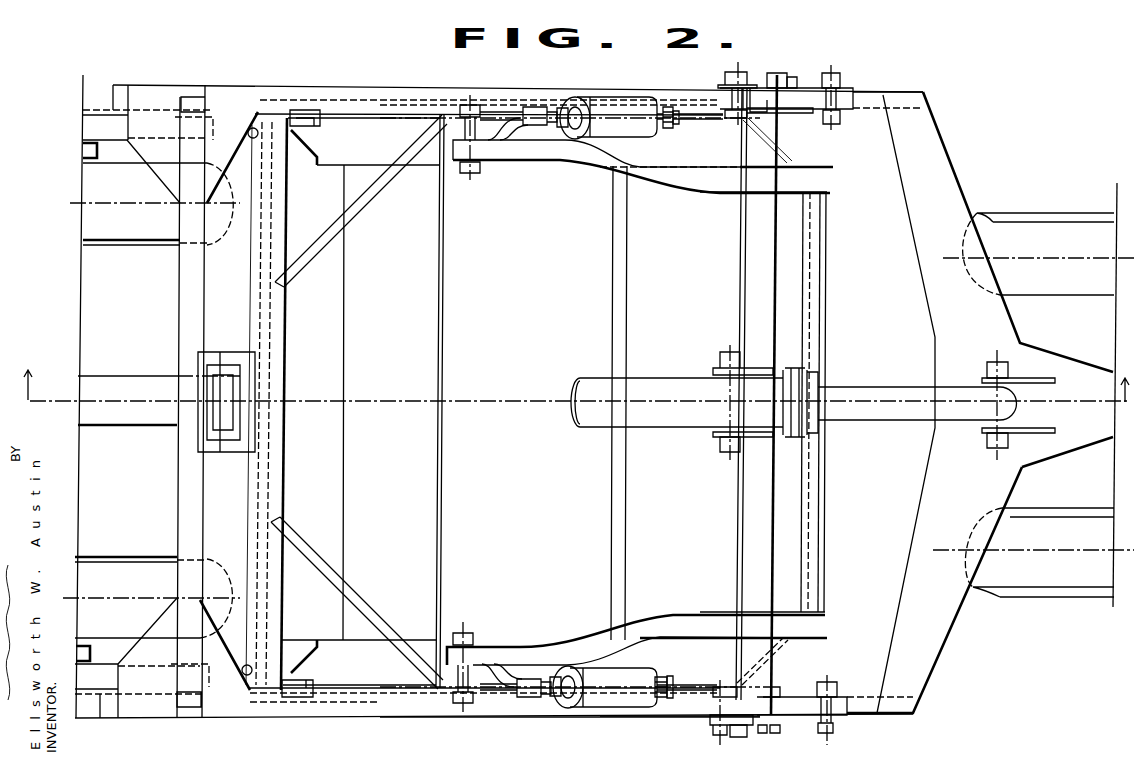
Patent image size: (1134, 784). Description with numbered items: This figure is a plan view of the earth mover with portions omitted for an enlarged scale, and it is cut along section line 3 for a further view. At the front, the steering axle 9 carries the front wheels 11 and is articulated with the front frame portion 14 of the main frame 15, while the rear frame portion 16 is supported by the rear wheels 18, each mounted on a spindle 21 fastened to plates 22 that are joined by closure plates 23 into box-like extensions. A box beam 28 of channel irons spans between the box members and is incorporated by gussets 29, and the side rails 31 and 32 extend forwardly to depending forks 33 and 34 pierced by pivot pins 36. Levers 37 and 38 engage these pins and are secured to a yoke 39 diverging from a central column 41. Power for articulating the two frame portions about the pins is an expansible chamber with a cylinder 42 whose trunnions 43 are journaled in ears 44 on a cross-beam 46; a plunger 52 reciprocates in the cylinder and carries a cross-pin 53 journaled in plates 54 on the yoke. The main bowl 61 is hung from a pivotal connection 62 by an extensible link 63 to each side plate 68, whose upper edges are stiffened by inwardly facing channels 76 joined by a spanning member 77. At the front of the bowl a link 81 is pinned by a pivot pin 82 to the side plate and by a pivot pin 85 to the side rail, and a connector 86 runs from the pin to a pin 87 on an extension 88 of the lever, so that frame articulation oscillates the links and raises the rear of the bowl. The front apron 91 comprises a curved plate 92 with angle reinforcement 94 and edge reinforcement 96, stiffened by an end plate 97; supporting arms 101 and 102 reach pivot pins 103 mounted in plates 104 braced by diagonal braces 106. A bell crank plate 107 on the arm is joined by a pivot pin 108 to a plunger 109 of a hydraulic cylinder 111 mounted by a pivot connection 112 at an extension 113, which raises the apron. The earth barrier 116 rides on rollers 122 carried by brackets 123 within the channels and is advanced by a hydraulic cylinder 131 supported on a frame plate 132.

The section line 3- 3 is at (575, 400).
The steering axle 9 is at (1110, 479).
The front wheels 11 is at (1006, 219).
The front frame portion 14 is at (952, 182).
The main frame 15 is at (457, 721).
The rear frame portion 16 is at (684, 715).
The rear wheels 18 is at (88, 228).
The spindle 21 is at (83, 152).
The plates 22 is at (100, 108).
The closure plates 23 is at (92, 127).
The box beam 28 is at (181, 492).
The gussets 29 is at (166, 185).
The side rail 31 is at (369, 86).
The side rail 32 is at (369, 716).
The depending fork 33 is at (829, 76).
The depending fork 34 is at (811, 717).
The pivot pins 36 is at (841, 80).
The lever 37 is at (876, 88).
The lever 38 is at (857, 717).
The yoke 39 is at (937, 481).
The central column 41 is at (1056, 455).
The cylinder 42 is at (684, 374).
The trunnions 43 is at (713, 434).
The ears 44 is at (759, 362).
The cross-beam 46 is at (741, 302).
The plunger 52 is at (873, 390).
The cross-pin 53 is at (987, 430).
The plates 54 is at (1046, 384).
The main bowl 61 is at (418, 638).
The pivotal connection 62 is at (193, 97).
The extensible link 63 is at (240, 112).
The side plate 68 is at (318, 112).
The channels 76 is at (389, 116).
The spanning member 77 is at (283, 375).
The link 81 is at (778, 78).
The pivot pin 82 is at (722, 80).
The pivot pin 85 is at (749, 88).
The connector 86 is at (746, 124).
The pin 87 is at (794, 78).
The extension 88 is at (808, 114).
The front apron 91 is at (827, 295).
The curved plate 92 is at (821, 250).
The angle reinforcement 94 is at (821, 215).
The edge reinforcement 96 is at (612, 297).
The plate 97 is at (813, 167).
The supporting arm 101 is at (603, 168).
The supporting arm 102 is at (598, 638).
The pivot pins 103 is at (478, 170).
The plates 104 is at (494, 114).
The diagonal braces 106 is at (352, 214).
The bell crank plate 107 is at (512, 142).
The pivot pin 108 is at (538, 107).
The plunger 109 is at (550, 118).
The hydraulic cylinder 111 is at (624, 110).
The pivot connection 112 is at (677, 126).
The extension 113 is at (667, 129).
The earth barrier 116 is at (346, 388).
The rollers 122 is at (319, 121).
The brackets 123 is at (309, 157).
The hydraulic cylinder 131 is at (150, 426).
The frame plate 132 is at (222, 352).